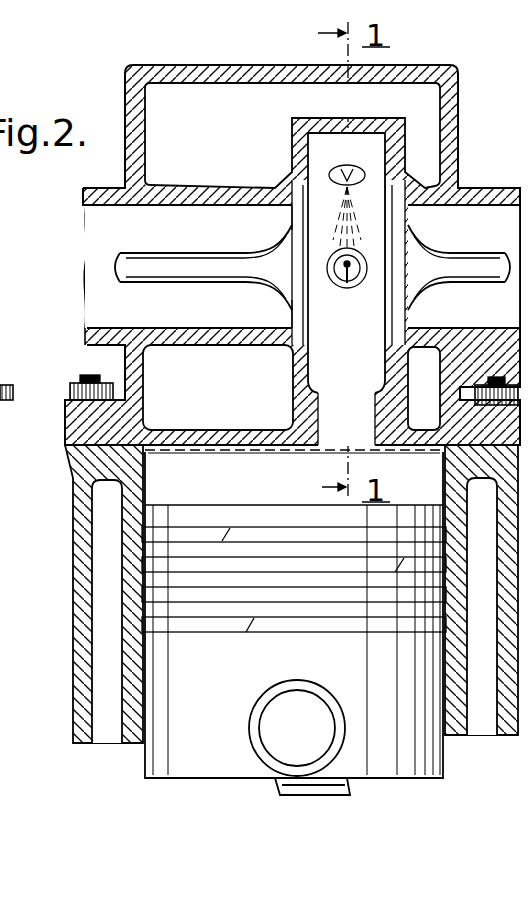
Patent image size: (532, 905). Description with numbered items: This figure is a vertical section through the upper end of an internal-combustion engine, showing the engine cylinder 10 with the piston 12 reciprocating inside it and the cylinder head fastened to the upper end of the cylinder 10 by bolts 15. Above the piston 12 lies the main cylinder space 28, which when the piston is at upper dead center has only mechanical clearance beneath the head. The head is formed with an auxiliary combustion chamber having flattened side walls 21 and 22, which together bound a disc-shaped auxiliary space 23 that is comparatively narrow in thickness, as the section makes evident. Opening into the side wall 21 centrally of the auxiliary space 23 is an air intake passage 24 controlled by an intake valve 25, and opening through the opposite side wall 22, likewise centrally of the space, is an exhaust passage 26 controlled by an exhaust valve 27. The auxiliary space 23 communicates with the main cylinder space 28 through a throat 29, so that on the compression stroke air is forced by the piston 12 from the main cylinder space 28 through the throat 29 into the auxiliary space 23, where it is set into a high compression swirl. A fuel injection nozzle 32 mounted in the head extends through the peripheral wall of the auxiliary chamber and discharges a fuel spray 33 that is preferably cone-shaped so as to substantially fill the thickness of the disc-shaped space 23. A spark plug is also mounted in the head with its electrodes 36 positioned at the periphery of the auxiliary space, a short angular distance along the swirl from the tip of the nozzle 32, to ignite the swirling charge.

The engine cylinder 10 is at (122, 593).
The piston 12 is at (177, 673).
The bolts 15 is at (82, 378).
The flattened side wall 21 is at (300, 386).
The flattened side wall 22 is at (403, 146).
The disc-shaped auxiliary space 23 is at (341, 364).
The air intake passage 24 is at (218, 212).
The intake valve 25 is at (290, 305).
The exhaust passage 26 is at (465, 205).
The exhaust valve 27 is at (407, 313).
The main cylinder space 28 is at (215, 487).
The throat 29 is at (320, 443).
The fuel injection nozzle 32 is at (350, 170).
The fuel spray 33 is at (335, 232).
The electrodes 36 is at (344, 284).